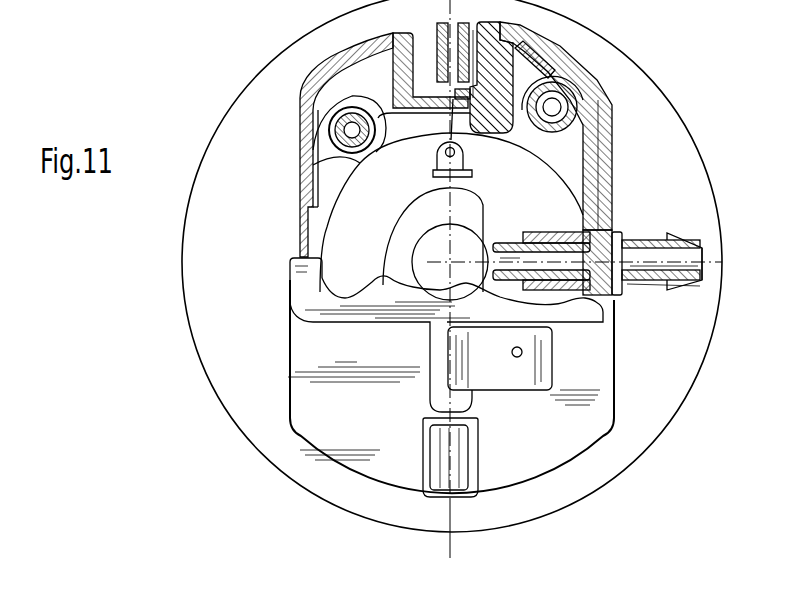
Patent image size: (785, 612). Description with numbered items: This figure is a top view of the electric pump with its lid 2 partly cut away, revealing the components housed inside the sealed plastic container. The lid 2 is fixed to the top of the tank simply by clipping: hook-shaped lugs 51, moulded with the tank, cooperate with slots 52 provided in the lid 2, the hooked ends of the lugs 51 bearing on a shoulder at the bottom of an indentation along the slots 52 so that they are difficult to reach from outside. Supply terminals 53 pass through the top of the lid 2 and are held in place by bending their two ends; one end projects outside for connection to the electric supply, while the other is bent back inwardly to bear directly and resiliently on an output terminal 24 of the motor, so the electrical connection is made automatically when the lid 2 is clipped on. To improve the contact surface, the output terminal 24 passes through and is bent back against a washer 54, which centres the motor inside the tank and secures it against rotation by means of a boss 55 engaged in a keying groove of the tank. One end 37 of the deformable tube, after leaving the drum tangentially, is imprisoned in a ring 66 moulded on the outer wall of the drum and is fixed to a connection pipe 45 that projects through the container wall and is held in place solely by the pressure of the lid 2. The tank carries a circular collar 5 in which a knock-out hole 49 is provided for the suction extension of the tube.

The lid 2 is at (337, 420).
The circular collar 5 is at (220, 342).
The output terminal 24 is at (437, 158).
The end of deformable tube 37 is at (333, 133).
The connection pipe 45 is at (643, 270).
The knock-out hole 49 is at (608, 85).
The lug 51 is at (462, 62).
The slot 52 is at (475, 40).
The supply terminal 53 is at (507, 370).
The washer 54 is at (525, 201).
The boss 55 is at (312, 230).
The ring 66 is at (330, 120).